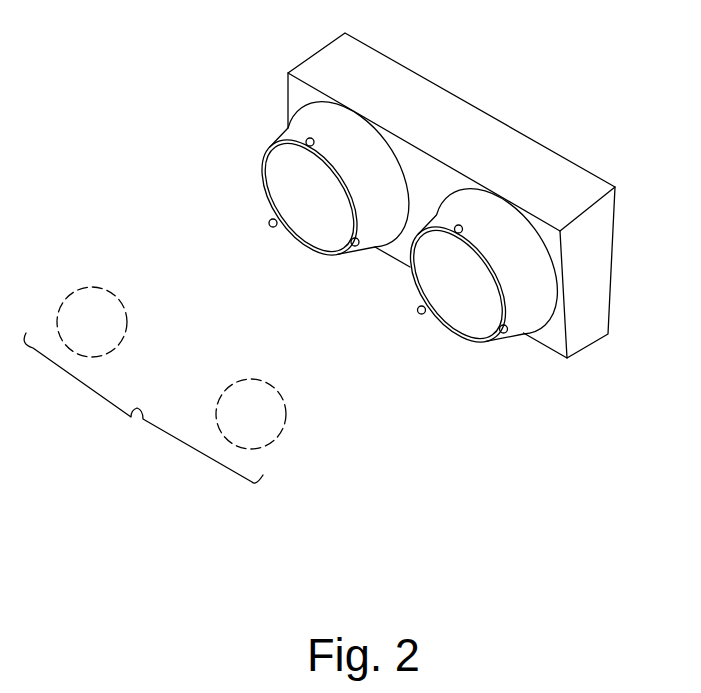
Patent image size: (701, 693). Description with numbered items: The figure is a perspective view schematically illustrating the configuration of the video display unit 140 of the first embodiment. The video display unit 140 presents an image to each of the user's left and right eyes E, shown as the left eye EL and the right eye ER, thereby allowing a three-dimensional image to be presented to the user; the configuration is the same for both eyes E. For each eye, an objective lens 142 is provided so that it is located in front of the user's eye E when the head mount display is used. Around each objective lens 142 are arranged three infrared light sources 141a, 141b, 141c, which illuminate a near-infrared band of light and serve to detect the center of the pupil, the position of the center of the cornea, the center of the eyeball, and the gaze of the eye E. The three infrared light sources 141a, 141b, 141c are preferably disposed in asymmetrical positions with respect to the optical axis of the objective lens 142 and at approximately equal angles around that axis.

The video display unit 140 is at (472, 101).
The infrared light source 141a is at (298, 131).
The infrared light source 141b is at (351, 239).
The infrared light source 141c is at (263, 219).
The objective lens 142 is at (317, 221).
The left eye EL is at (114, 292).
The right eye ER is at (276, 401).
The eye E is at (143, 408).